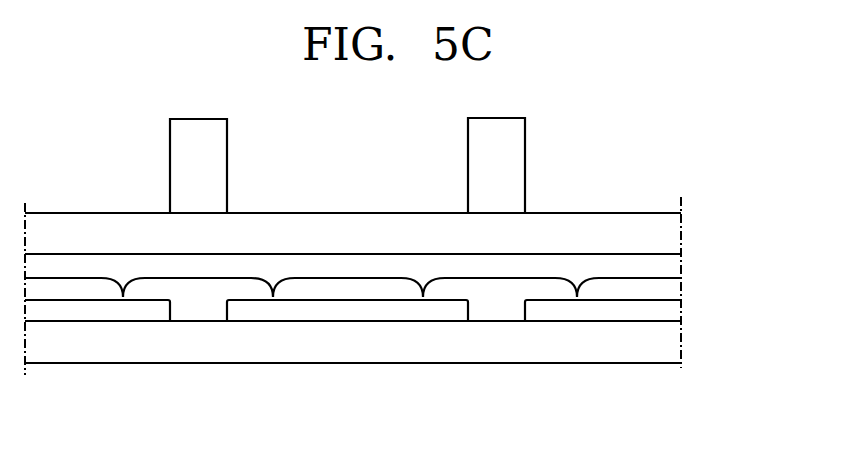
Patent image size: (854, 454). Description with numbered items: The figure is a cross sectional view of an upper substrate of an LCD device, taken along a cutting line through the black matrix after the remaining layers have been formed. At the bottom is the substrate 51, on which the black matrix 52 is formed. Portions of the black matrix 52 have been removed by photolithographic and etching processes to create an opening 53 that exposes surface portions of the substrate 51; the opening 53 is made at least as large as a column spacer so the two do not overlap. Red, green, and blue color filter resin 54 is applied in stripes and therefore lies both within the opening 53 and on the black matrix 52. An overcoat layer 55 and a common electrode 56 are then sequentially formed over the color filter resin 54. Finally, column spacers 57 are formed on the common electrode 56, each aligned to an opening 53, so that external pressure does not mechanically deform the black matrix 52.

The substrate 51 is at (681, 340).
The black matrix 52 is at (681, 308).
The opening 53 is at (497, 308).
The color filter resin 54 is at (681, 283).
The overcoat layer 55 is at (681, 255).
The common electrode 56 is at (681, 227).
The column spacers 57 is at (518, 152).